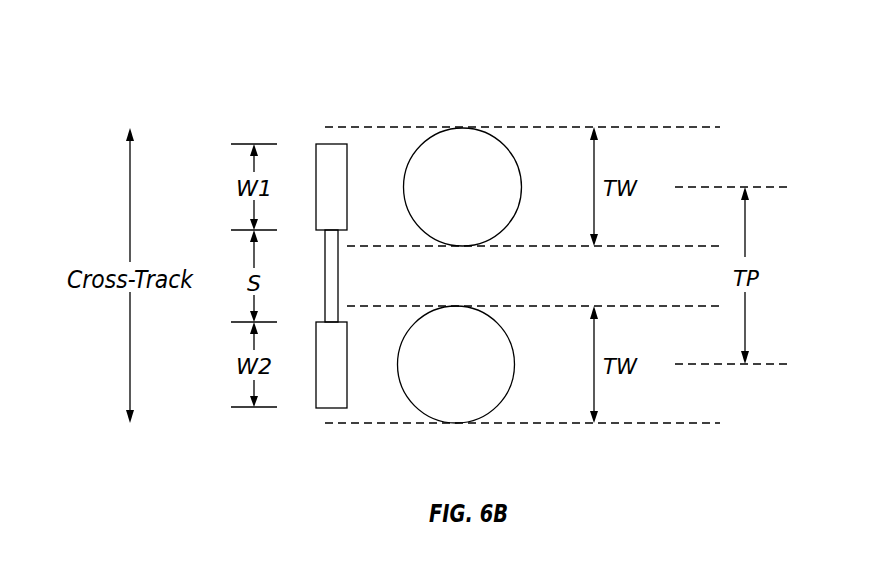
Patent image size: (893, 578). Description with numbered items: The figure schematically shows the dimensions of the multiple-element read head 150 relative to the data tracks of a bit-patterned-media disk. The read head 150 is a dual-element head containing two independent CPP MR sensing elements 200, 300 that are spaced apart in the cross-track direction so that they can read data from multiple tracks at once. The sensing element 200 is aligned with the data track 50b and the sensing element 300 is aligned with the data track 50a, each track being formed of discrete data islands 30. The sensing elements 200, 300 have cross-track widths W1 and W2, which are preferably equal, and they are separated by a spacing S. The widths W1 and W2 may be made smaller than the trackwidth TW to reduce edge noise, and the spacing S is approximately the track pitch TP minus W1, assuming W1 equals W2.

The read head 150 is at (272, 72).
The sensing element 200 is at (320, 143).
The sensing element 300 is at (320, 409).
The data islands 30 is at (498, 166).
The data track 50a is at (774, 363).
The data track 50b is at (774, 186).